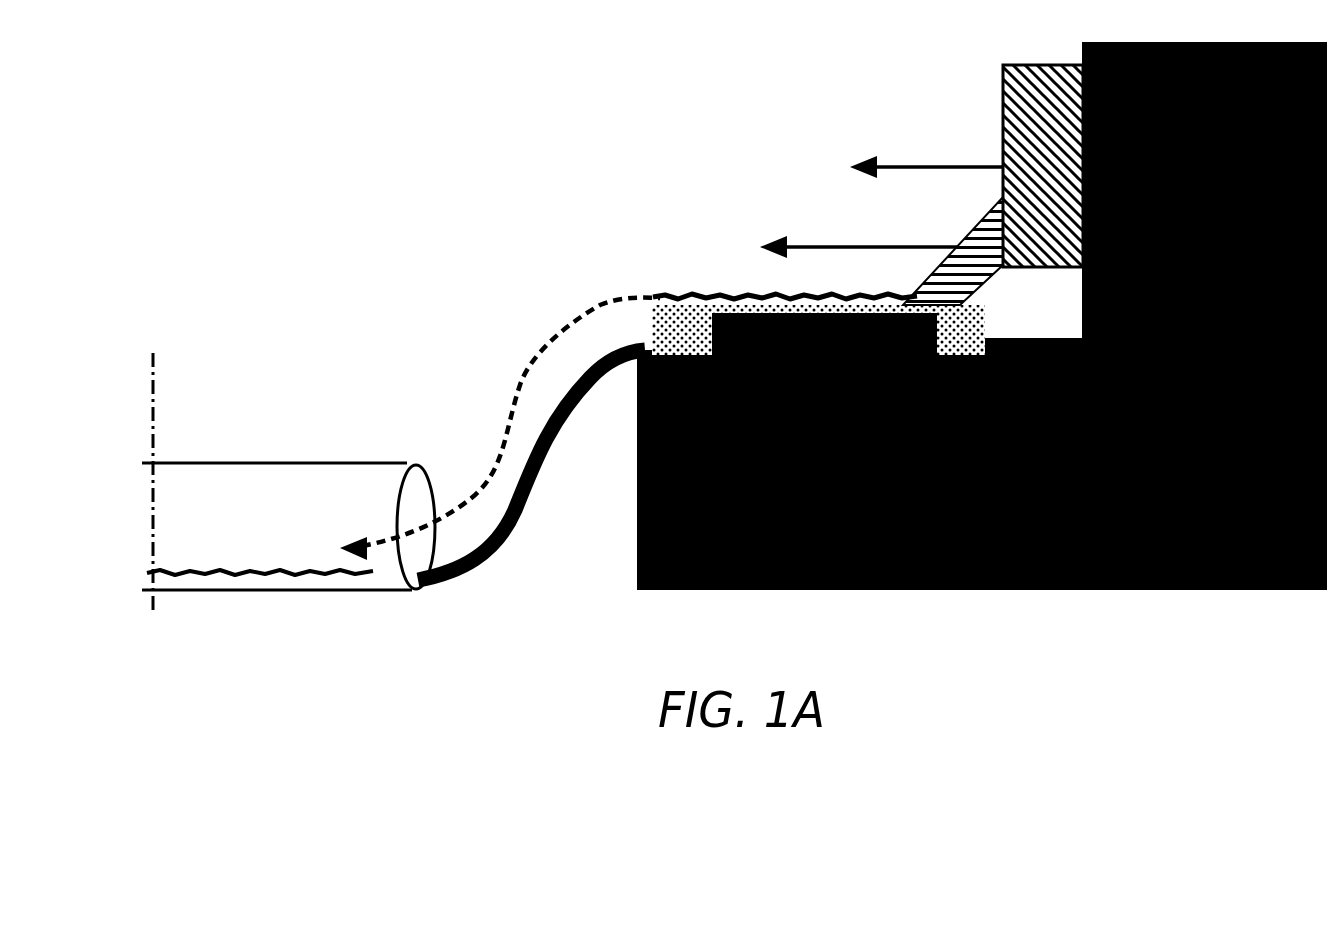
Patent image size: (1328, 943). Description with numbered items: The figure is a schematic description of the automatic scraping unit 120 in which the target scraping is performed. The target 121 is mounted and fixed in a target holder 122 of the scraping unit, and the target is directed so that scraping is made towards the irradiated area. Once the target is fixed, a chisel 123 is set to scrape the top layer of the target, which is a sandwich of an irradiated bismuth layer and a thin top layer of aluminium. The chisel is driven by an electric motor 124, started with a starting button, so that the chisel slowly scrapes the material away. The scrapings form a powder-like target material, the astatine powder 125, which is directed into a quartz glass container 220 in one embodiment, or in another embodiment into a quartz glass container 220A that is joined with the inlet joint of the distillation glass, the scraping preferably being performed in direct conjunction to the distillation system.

The automatic scraping unit 120 is at (872, 316).
The target 121 is at (848, 326).
The target holder 122 is at (824, 338).
The chisel 123 is at (881, 251).
The electric motor 124 is at (966, 166).
The At-211 powder 125 is at (785, 273).
The quartz glass container 220 is at (288, 482).
The quartz glass container joined with the inlet joint of the distillation glass 220A is at (260, 572).